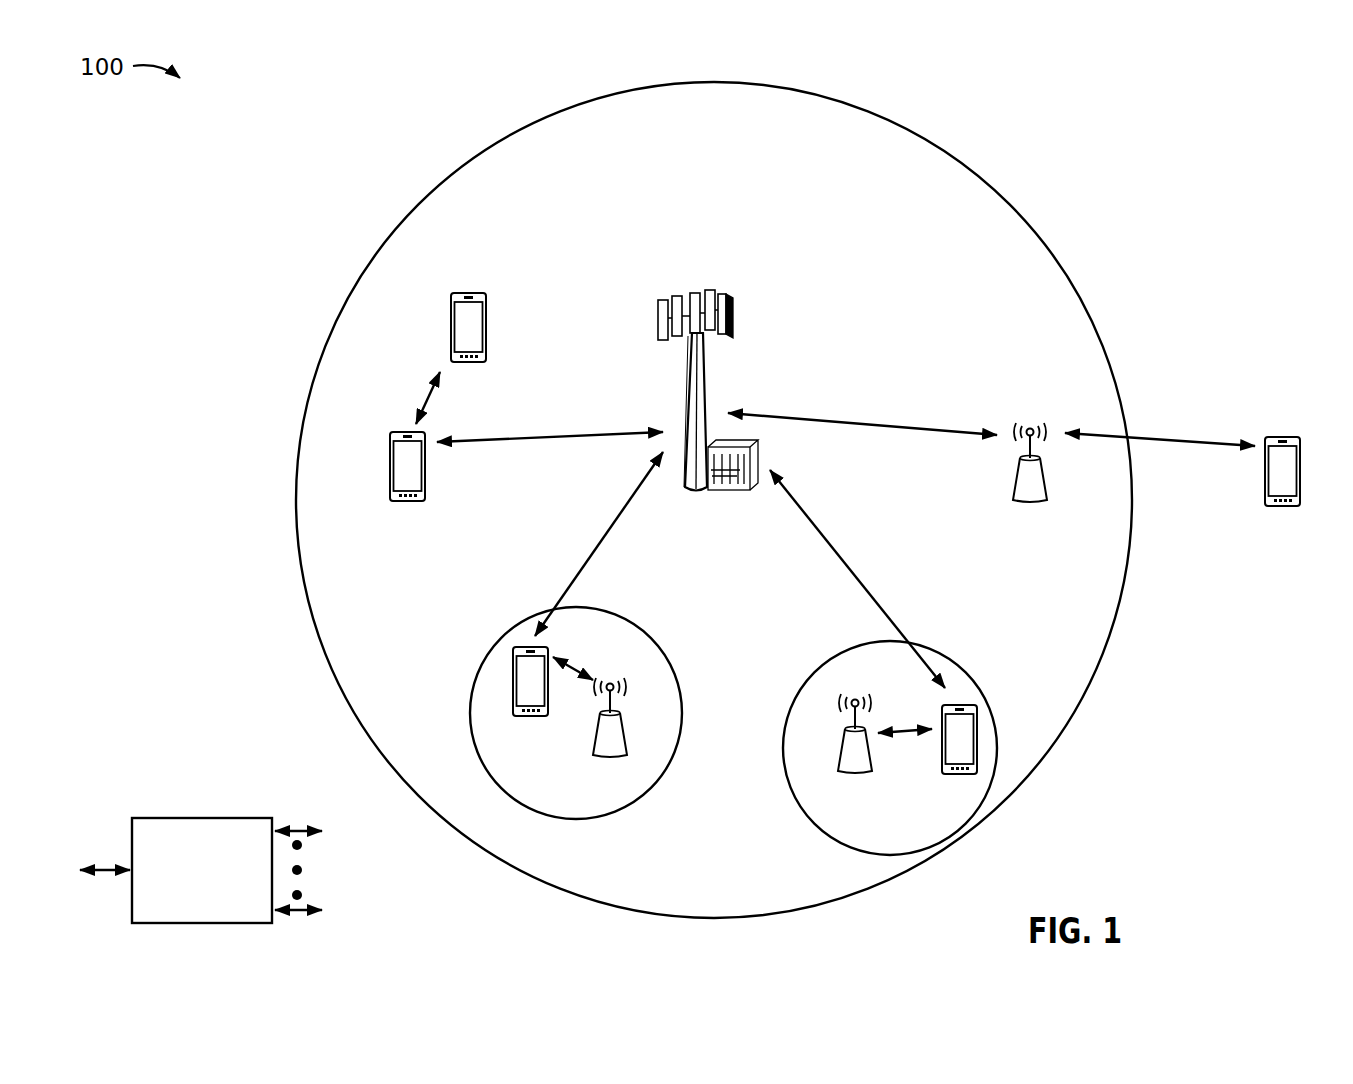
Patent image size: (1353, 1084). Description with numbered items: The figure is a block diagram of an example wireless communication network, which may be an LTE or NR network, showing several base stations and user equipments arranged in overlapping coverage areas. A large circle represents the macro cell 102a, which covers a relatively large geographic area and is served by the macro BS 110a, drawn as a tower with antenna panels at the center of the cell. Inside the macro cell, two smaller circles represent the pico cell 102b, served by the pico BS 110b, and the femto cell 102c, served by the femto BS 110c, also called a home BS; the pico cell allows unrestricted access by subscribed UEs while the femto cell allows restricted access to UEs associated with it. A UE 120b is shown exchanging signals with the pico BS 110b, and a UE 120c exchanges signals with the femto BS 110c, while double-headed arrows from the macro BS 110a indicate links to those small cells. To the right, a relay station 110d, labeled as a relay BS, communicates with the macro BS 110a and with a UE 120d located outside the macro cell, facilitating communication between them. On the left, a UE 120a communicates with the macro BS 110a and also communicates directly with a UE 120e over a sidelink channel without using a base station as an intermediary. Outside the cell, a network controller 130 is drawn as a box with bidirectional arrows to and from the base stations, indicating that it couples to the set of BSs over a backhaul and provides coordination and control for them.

The macro cell 102a is at (992, 190).
The pico cell 102b is at (663, 653).
The femto cell 102c is at (826, 660).
The macro BS 110a is at (700, 280).
The pico BS 110b is at (633, 738).
The femto BS 110c is at (835, 758).
The relay station 110d is at (1030, 423).
The UE 120a is at (388, 465).
The UE 120b is at (515, 716).
The UE 120c is at (940, 775).
The UE 120d is at (1298, 432).
The UE 120e is at (450, 313).
The network controller 130 is at (200, 815).